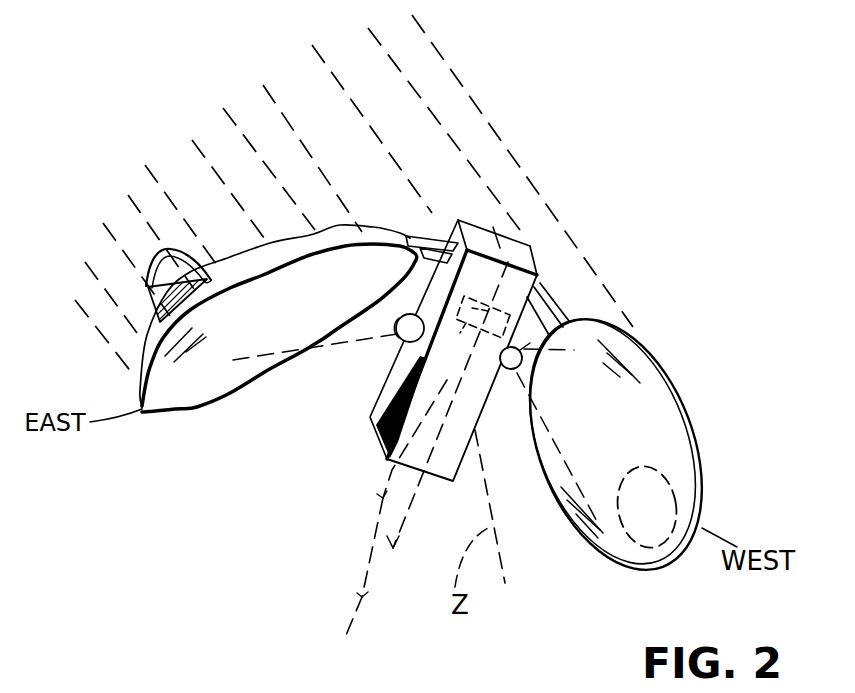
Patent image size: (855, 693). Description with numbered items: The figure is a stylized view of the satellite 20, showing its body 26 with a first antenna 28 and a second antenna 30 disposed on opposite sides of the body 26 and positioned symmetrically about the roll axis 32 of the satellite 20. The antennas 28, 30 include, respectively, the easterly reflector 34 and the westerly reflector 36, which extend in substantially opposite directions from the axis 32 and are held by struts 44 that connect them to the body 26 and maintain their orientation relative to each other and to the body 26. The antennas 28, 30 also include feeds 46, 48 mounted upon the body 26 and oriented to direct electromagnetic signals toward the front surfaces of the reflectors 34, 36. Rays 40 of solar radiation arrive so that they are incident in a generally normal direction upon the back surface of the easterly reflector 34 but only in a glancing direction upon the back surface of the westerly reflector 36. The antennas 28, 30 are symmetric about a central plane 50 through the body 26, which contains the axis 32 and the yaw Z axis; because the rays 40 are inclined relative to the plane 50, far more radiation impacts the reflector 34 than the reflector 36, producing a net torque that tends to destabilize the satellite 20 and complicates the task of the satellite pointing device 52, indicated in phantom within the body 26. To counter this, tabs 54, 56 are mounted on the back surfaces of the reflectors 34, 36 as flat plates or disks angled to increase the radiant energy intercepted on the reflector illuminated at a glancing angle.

The satellite 20 is at (622, 457).
The body 26 is at (463, 364).
The first antenna 28 is at (224, 359).
The second antenna 30 is at (622, 461).
The roll axis 32 is at (364, 600).
The easterly reflector 34 is at (163, 413).
The westerly reflector 36 is at (633, 567).
The rays 40 is at (485, 104).
The struts 44 is at (425, 238).
The feed 46 is at (396, 334).
The feed 48 is at (509, 372).
The central plane 50 is at (383, 499).
The satellite pointing device 52 is at (448, 387).
The tab 54 is at (146, 286).
The tab 56 is at (647, 463).